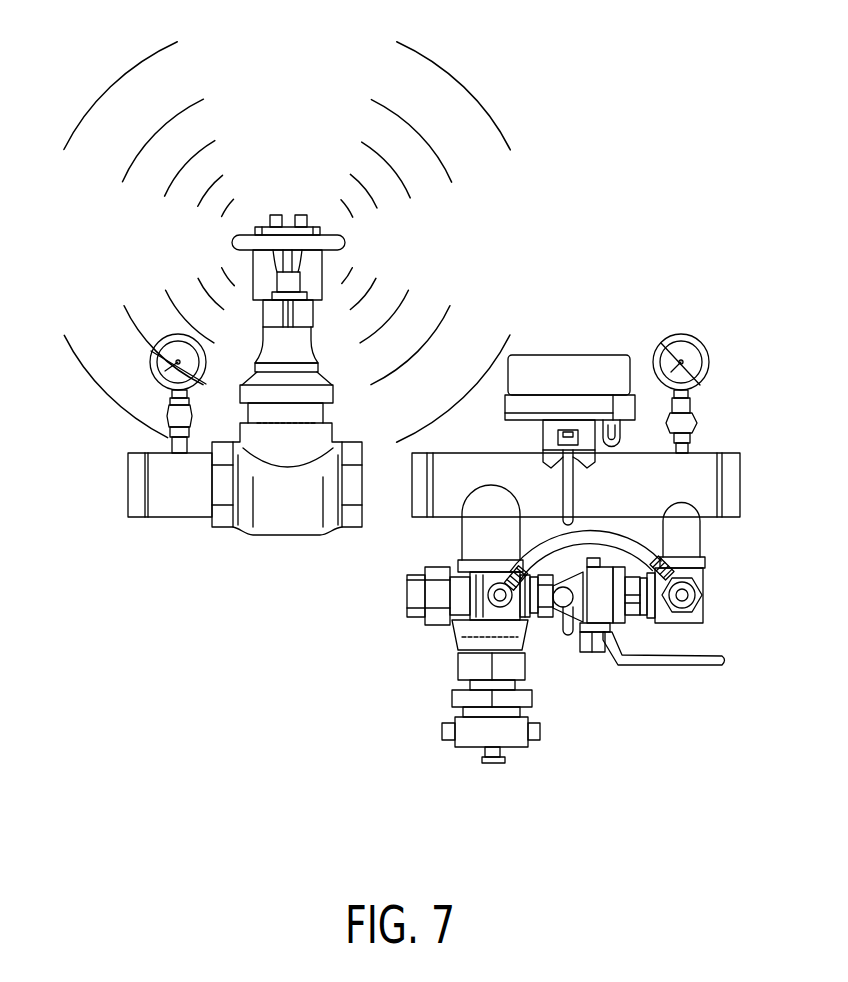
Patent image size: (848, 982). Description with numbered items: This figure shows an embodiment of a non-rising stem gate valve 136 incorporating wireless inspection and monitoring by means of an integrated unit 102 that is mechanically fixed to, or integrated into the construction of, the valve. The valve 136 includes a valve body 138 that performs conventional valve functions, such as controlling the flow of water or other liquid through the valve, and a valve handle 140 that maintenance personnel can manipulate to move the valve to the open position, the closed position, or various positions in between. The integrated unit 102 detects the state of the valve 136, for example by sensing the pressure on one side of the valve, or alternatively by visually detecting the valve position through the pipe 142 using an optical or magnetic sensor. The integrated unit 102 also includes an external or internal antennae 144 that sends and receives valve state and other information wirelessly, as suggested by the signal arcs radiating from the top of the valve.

The integrated unit 102 is at (292, 524).
The non-rising stem gate valve 136 is at (616, 201).
The valve body 138 is at (436, 524).
The valve handle 140 is at (665, 663).
The pipe 142 is at (468, 470).
The antennae 144 is at (248, 230).